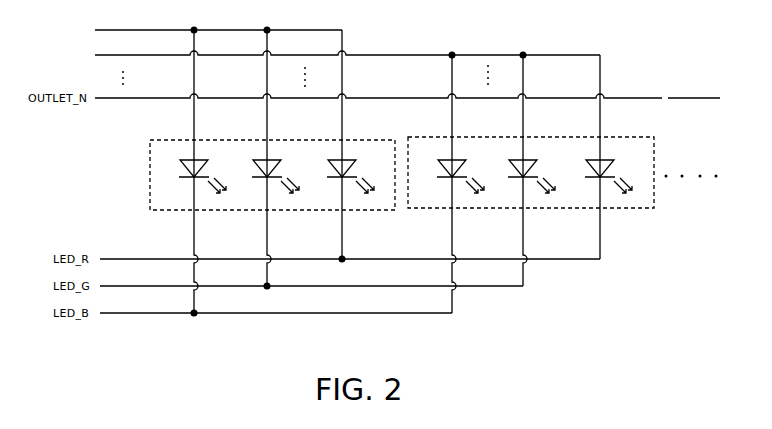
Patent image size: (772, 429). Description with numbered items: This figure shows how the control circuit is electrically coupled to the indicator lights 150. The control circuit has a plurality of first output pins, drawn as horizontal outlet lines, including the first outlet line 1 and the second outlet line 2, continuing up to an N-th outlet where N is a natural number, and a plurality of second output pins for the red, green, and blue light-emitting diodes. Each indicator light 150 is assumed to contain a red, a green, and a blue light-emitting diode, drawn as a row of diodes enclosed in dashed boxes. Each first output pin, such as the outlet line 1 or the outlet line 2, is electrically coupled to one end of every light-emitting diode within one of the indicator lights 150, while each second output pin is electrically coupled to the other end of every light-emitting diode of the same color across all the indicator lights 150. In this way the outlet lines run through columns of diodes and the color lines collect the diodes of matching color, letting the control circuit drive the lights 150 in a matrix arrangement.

The indicator light 150 is at (150, 172).
The OUTLET_1 signal line 1 is at (185, 30).
The OUTLET_2 signal line 2 is at (314, 55).